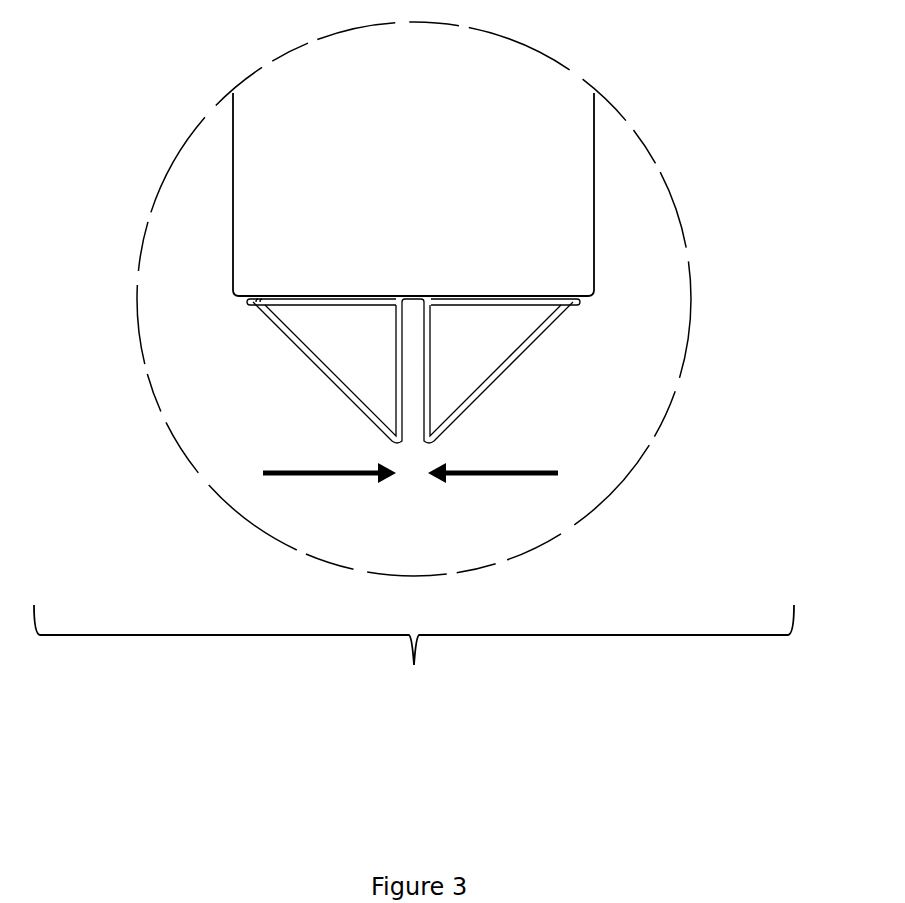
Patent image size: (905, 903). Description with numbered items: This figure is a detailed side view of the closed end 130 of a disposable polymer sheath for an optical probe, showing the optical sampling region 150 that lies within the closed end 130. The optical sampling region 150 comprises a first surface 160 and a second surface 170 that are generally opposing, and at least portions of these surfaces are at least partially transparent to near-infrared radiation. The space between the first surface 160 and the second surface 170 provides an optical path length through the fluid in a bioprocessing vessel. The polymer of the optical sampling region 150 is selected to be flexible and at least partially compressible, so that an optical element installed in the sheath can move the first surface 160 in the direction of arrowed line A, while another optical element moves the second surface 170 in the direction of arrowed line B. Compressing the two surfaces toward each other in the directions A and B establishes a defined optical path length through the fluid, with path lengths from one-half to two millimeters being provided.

The closed end 130 is at (415, 728).
The optical sampling region 150 is at (260, 371).
The first surface 160 is at (398, 372).
The second surface 170 is at (429, 372).
The arrowed line A is at (327, 478).
The arrowed line B is at (496, 478).